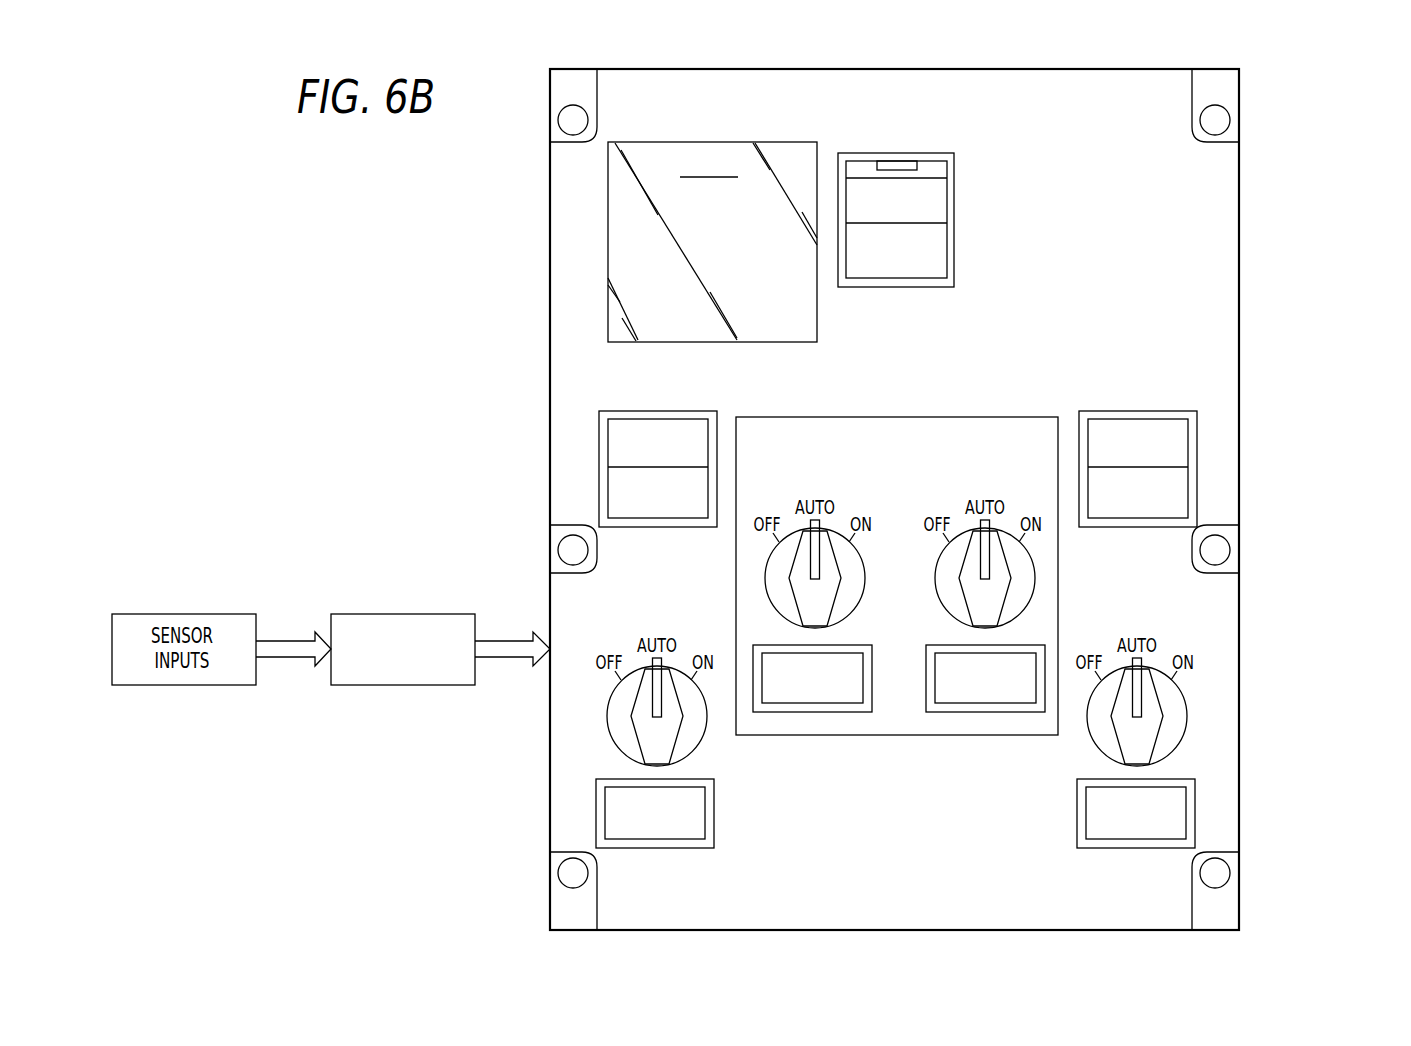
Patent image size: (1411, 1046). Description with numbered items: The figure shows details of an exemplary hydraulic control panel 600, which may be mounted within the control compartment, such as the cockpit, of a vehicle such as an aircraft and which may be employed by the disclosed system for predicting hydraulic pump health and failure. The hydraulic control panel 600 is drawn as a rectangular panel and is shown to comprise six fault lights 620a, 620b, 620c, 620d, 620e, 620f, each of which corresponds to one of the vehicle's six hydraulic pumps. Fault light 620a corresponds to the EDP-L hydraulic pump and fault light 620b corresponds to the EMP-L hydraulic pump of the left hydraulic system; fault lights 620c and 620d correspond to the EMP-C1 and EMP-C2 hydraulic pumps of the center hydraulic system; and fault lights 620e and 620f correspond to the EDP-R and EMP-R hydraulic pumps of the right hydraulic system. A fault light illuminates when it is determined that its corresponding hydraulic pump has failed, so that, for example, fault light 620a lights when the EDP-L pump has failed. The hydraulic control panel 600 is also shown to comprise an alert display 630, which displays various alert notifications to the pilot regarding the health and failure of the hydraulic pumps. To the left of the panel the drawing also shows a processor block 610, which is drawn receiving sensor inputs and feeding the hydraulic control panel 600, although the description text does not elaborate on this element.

The hydraulic control panel 600 is at (921, 499).
The processor(s) 610 is at (403, 614).
The fault light 620a is at (612, 493).
The fault light 620b is at (620, 815).
The fault light 620c is at (813, 692).
The fault light 620d is at (988, 692).
The fault light 620e is at (1170, 492).
The fault light 620f is at (1165, 812).
The alert display 630 is at (608, 235).